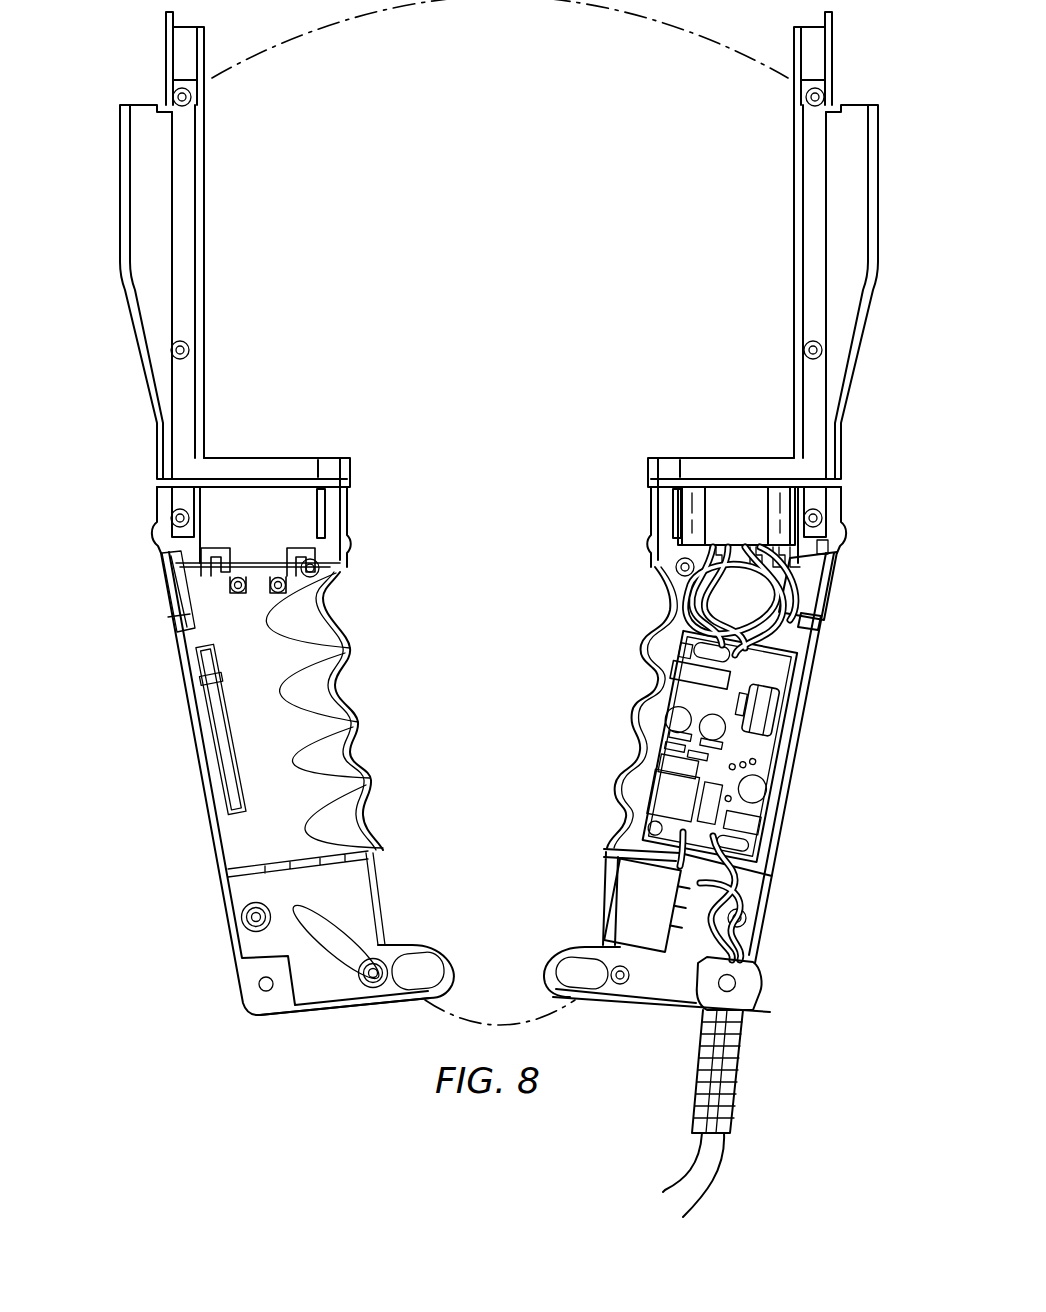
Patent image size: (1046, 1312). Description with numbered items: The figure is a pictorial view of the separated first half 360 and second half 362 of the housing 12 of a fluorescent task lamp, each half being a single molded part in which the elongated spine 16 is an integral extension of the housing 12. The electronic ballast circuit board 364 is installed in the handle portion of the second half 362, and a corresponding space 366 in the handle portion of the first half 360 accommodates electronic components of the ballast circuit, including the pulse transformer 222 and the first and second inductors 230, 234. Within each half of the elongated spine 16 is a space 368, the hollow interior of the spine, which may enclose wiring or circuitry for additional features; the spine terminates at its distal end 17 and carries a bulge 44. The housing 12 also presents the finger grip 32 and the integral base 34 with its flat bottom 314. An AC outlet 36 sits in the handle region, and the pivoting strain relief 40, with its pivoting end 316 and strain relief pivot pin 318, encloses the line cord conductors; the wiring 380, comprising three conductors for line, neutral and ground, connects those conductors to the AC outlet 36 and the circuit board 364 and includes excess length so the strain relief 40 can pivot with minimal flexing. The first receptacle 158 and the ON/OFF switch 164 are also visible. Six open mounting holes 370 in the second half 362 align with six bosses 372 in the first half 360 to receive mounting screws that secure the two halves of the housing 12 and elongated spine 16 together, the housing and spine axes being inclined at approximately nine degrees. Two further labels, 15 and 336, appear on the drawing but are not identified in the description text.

The housing 12 is at (207, 848).
The shelf 15 is at (277, 466).
The elongated spine 16 is at (206, 394).
The distal end 17 is at (166, 48).
The finger grip 32 is at (360, 762).
The integral base 34 is at (448, 982).
The AC outlet 36 is at (607, 893).
The pivoting strain relief 40 is at (740, 1088).
The bulge 44 is at (120, 190).
The first receptacle 158 is at (740, 495).
The ON/OFF switch 164 is at (836, 594).
The pulse transformer 222 is at (762, 795).
The first inductor 230 is at (786, 706).
The second inductor 234 is at (700, 680).
The flat bottom 314 is at (331, 1016).
The pivoting end 316 is at (758, 1003).
The strain relief pivot pin 318 is at (737, 983).
The cavity 336 is at (146, 150).
The first half 360 is at (324, 268).
The second half 362 is at (673, 268).
The electronic ballast circuit board 364 is at (793, 752).
The space 366 is at (273, 670).
The space 368 is at (185, 190).
The open mounting holes 370 is at (805, 103).
The bosses 372 is at (194, 97).
The wiring 380 is at (750, 937).